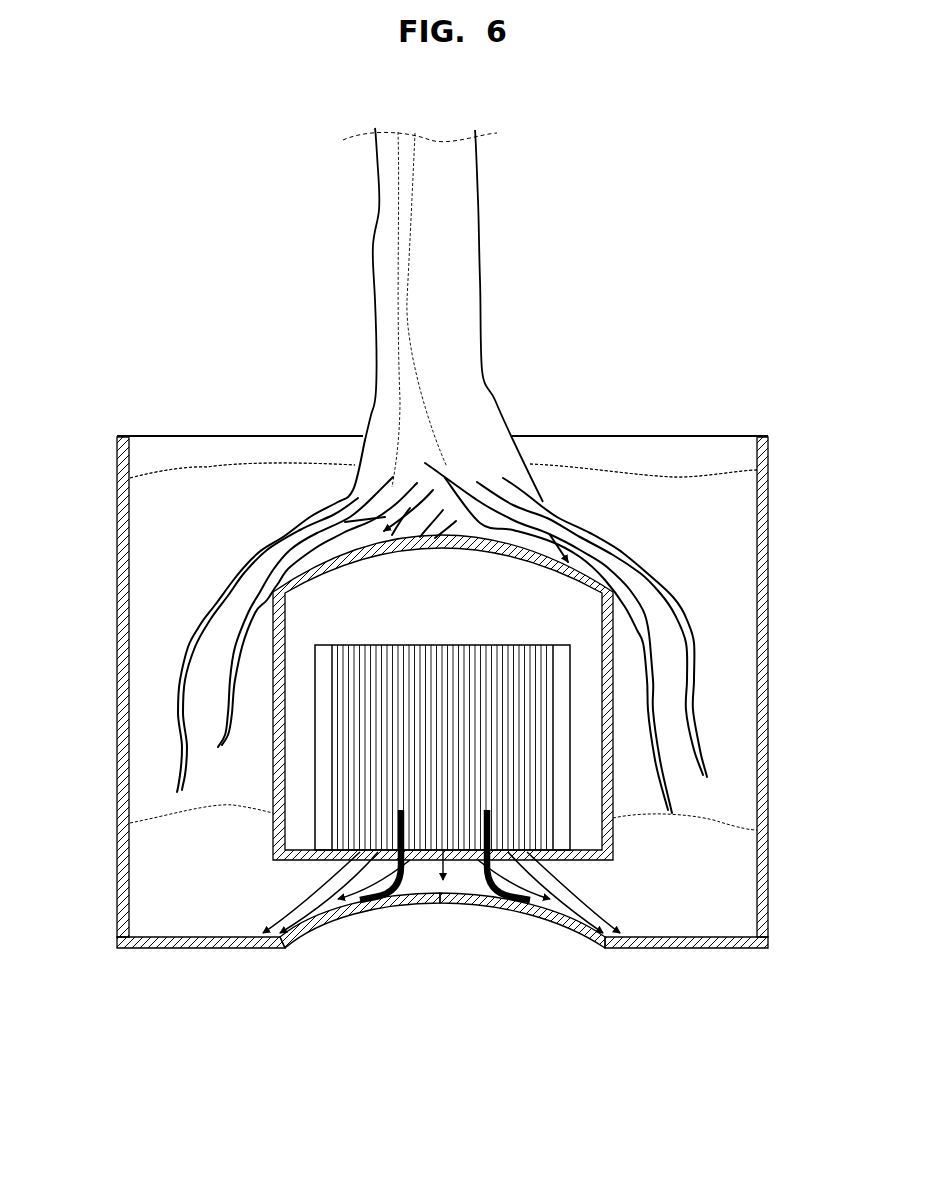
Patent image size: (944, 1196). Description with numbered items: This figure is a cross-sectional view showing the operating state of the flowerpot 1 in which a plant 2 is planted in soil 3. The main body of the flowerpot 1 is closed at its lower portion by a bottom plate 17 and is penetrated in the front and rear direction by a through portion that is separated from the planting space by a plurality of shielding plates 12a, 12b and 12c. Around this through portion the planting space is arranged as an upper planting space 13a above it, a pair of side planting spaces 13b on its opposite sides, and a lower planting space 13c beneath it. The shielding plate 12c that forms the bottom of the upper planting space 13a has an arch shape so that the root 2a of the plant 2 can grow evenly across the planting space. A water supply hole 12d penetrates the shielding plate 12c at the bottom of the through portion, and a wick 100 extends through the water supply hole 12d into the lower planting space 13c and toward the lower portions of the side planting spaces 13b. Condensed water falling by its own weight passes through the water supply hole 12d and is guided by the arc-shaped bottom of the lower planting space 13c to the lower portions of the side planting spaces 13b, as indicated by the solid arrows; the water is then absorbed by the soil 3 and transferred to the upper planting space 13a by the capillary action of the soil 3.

The flowerpot 1 is at (448, 724).
The plant 2 is at (482, 250).
The root 2a is at (190, 637).
The soil 3 is at (200, 467).
The shielding plate 12a is at (560, 548).
The shielding plate 12b is at (132, 826).
The shielding plate 12c is at (595, 940).
The water supply hole 12d is at (380, 900).
The upper planting space 13a is at (663, 527).
The side planting spaces 13b is at (140, 734).
The lower planting space 13c is at (452, 880).
The bottom plate 17 is at (190, 950).
The wick 100 is at (488, 907).